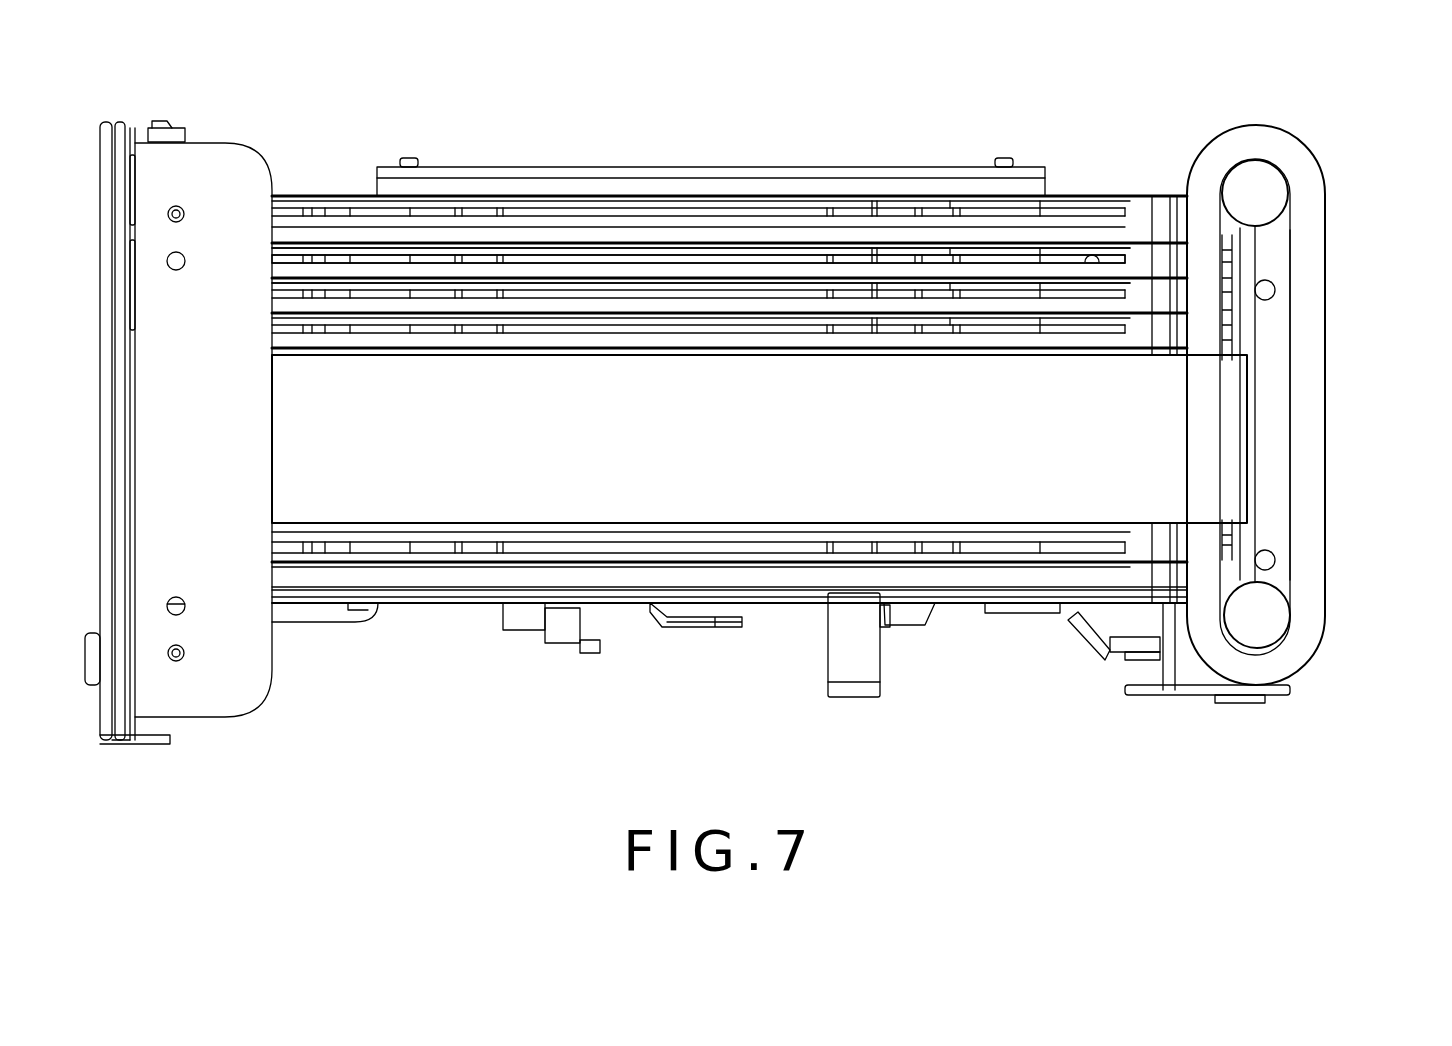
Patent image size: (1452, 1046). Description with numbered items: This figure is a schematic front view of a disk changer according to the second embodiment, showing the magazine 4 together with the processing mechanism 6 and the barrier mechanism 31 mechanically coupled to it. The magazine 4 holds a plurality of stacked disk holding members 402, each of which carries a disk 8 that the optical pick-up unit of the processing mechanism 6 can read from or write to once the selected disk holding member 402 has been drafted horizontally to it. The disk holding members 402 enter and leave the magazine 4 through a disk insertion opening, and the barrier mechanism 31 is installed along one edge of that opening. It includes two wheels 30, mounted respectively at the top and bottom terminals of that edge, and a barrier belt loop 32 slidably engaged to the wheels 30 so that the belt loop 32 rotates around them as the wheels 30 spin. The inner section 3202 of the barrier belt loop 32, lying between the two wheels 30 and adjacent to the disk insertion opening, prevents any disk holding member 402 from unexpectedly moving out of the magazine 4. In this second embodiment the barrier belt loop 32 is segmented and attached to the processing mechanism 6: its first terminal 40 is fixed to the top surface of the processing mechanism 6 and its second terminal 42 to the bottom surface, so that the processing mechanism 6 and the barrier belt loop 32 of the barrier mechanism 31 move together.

The magazine 4 is at (884, 156).
The disk holding members 402 is at (510, 280).
The disk 8 is at (673, 270).
The processing mechanism 6 is at (1222, 412).
The barrier mechanism 31 is at (1254, 114).
The wheels 30 is at (1272, 194).
The barrier belt loop 32 is at (1307, 490).
The inner section 3202 is at (1207, 237).
The first terminal 40 is at (1207, 357).
The second terminal 42 is at (1220, 527).